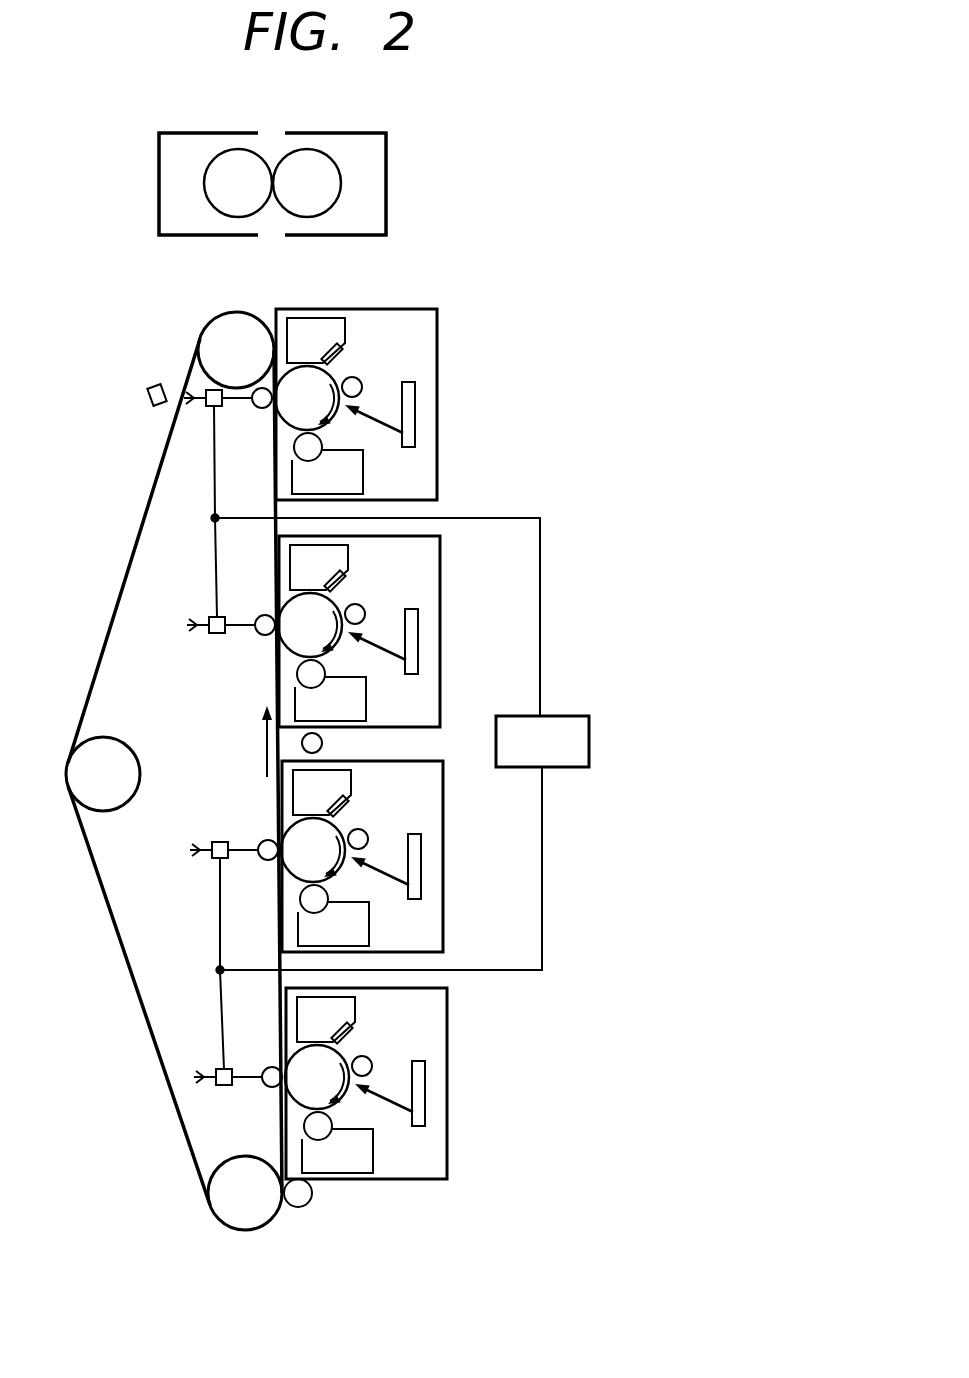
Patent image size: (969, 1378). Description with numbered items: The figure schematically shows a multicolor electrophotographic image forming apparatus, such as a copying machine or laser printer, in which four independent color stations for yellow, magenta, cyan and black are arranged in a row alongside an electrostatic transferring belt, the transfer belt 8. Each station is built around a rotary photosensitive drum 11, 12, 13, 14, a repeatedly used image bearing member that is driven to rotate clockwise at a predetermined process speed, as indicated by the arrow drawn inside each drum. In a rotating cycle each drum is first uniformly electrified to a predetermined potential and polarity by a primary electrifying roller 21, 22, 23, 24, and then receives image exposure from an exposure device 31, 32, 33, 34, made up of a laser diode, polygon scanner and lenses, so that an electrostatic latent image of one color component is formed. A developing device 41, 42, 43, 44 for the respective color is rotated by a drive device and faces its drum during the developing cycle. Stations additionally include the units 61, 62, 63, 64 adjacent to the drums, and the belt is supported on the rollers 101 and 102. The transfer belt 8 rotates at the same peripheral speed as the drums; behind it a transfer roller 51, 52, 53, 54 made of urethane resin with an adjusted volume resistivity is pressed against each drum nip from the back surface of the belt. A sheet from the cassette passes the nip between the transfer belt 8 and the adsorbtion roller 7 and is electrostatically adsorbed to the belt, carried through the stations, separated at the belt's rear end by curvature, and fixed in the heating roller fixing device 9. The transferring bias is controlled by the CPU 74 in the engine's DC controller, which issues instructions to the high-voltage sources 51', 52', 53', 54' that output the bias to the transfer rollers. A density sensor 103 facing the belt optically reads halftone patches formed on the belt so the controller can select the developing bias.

The adsorbtion roller 7 is at (308, 1207).
The transfer belt 8 is at (135, 992).
The heating roller fixing device 9 is at (386, 172).
The photosensitive drum 11 is at (340, 1065).
The photosensitive drum 12 is at (336, 838).
The photosensitive drum 13 is at (333, 613).
The photosensitive drum 14 is at (333, 368).
The primary electrifying roller 21 is at (392, 1053).
The primary electrifying roller 22 is at (388, 826).
The primary electrifying roller 23 is at (385, 601).
The primary electrifying roller 24 is at (362, 381).
The exposure device 31 is at (426, 1093).
The exposure device 32 is at (422, 866).
The exposure device 33 is at (419, 641).
The exposure device 34 is at (417, 408).
The developing device 41 is at (362, 1142).
The developing device 42 is at (358, 915).
The developing device 43 is at (355, 690).
The developing device 44 is at (353, 474).
The transfer roller 51 is at (262, 1099).
The transfer roller 52 is at (258, 872).
The transfer roller 53 is at (255, 647).
The transfer roller 54 is at (252, 420).
The high-voltage source 51' is at (223, 1100).
The high-voltage source 52' is at (219, 873).
The high-voltage source 53' is at (216, 648).
The high-voltage source 54' is at (213, 421).
The developing device 61 is at (351, 1019).
The developing device 62 is at (347, 792).
The developing device 63 is at (344, 567).
The developing device 64 is at (342, 329).
The CPU 74 is at (563, 713).
The belt support roller 101 is at (138, 755).
The belt drive roller 102 is at (222, 313).
The density sensor 103 is at (144, 388).